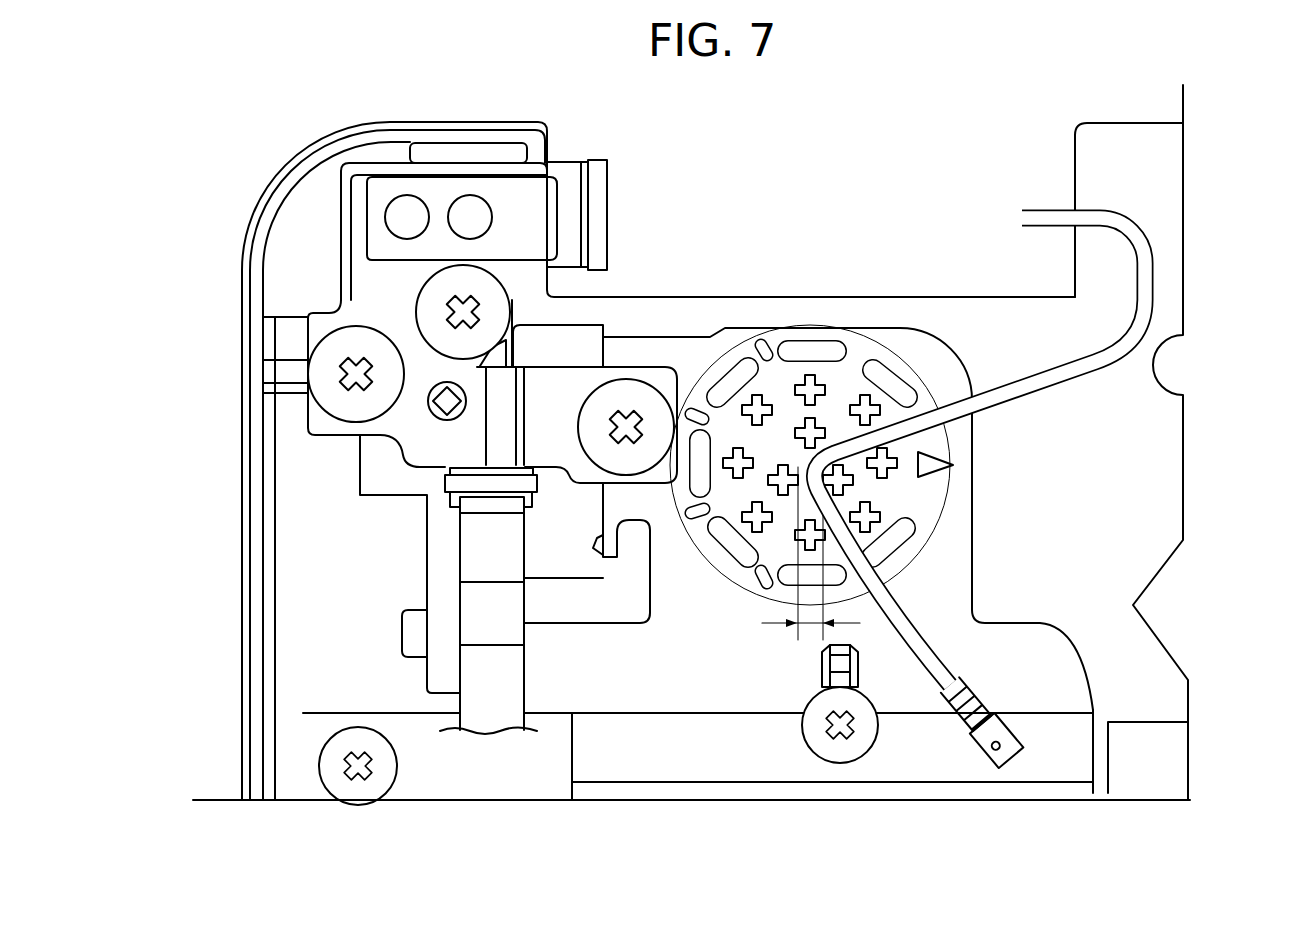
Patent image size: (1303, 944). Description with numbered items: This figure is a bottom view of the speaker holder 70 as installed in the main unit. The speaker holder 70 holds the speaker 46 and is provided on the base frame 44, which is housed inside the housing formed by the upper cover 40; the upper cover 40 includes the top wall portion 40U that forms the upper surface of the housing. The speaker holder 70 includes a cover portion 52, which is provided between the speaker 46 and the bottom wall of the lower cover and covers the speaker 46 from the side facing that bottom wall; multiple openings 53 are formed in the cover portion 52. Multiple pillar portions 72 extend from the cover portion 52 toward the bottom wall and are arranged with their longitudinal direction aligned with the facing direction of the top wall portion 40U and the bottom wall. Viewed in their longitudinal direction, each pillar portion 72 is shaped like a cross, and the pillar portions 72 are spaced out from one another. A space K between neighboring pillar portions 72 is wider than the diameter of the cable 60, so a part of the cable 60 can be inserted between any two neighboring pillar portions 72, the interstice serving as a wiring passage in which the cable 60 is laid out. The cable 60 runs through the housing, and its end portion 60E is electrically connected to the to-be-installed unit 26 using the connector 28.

The upper cover 40 is at (273, 180).
The top wall portion 40U is at (1148, 492).
The base frame 44 is at (650, 682).
The to-be-installed unit 26 is at (755, 763).
The connector 28 is at (983, 777).
The speaker holder 70 is at (905, 330).
The speaker 46 is at (930, 535).
The cover portion 52 is at (786, 377).
The pillar portions 72 is at (845, 481).
The space K is at (810, 628).
The openings 53 is at (900, 393).
The cable 60 is at (1031, 392).
The end portion 60E is at (952, 672).